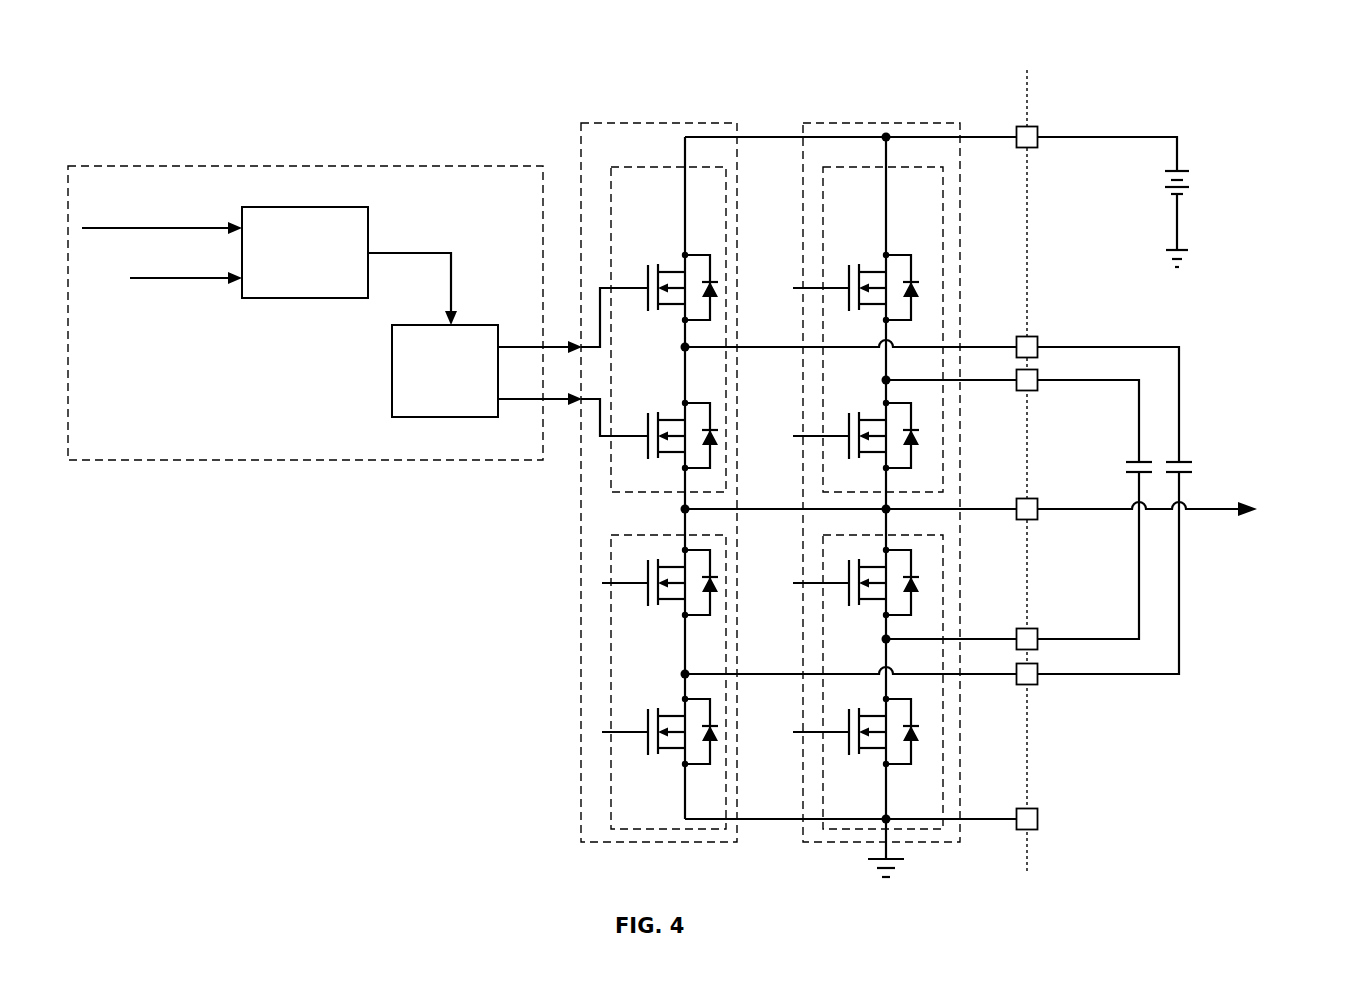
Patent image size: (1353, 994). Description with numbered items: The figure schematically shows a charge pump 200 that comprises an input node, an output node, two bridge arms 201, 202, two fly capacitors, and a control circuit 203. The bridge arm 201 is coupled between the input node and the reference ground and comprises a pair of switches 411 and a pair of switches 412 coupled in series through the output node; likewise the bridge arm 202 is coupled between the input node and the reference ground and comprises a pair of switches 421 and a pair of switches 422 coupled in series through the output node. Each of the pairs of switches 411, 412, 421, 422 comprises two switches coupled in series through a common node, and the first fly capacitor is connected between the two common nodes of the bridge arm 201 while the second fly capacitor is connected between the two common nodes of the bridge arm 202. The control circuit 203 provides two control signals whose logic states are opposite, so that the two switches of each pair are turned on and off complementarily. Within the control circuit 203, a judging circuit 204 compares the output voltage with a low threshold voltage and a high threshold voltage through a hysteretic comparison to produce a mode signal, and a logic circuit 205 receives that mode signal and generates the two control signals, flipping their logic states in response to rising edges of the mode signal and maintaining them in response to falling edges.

The charge pump 200 is at (1263, 80).
The bridge arm 201 is at (684, 119).
The bridge arm 202 is at (889, 119).
The control circuit 203 is at (398, 152).
The judging circuit 204 is at (259, 298).
The logic circuit 205 is at (428, 417).
The pair of switches 411 is at (653, 329).
The pair of switches 412 is at (647, 682).
The pair of switches 421 is at (850, 329).
The pair of switches 422 is at (850, 682).